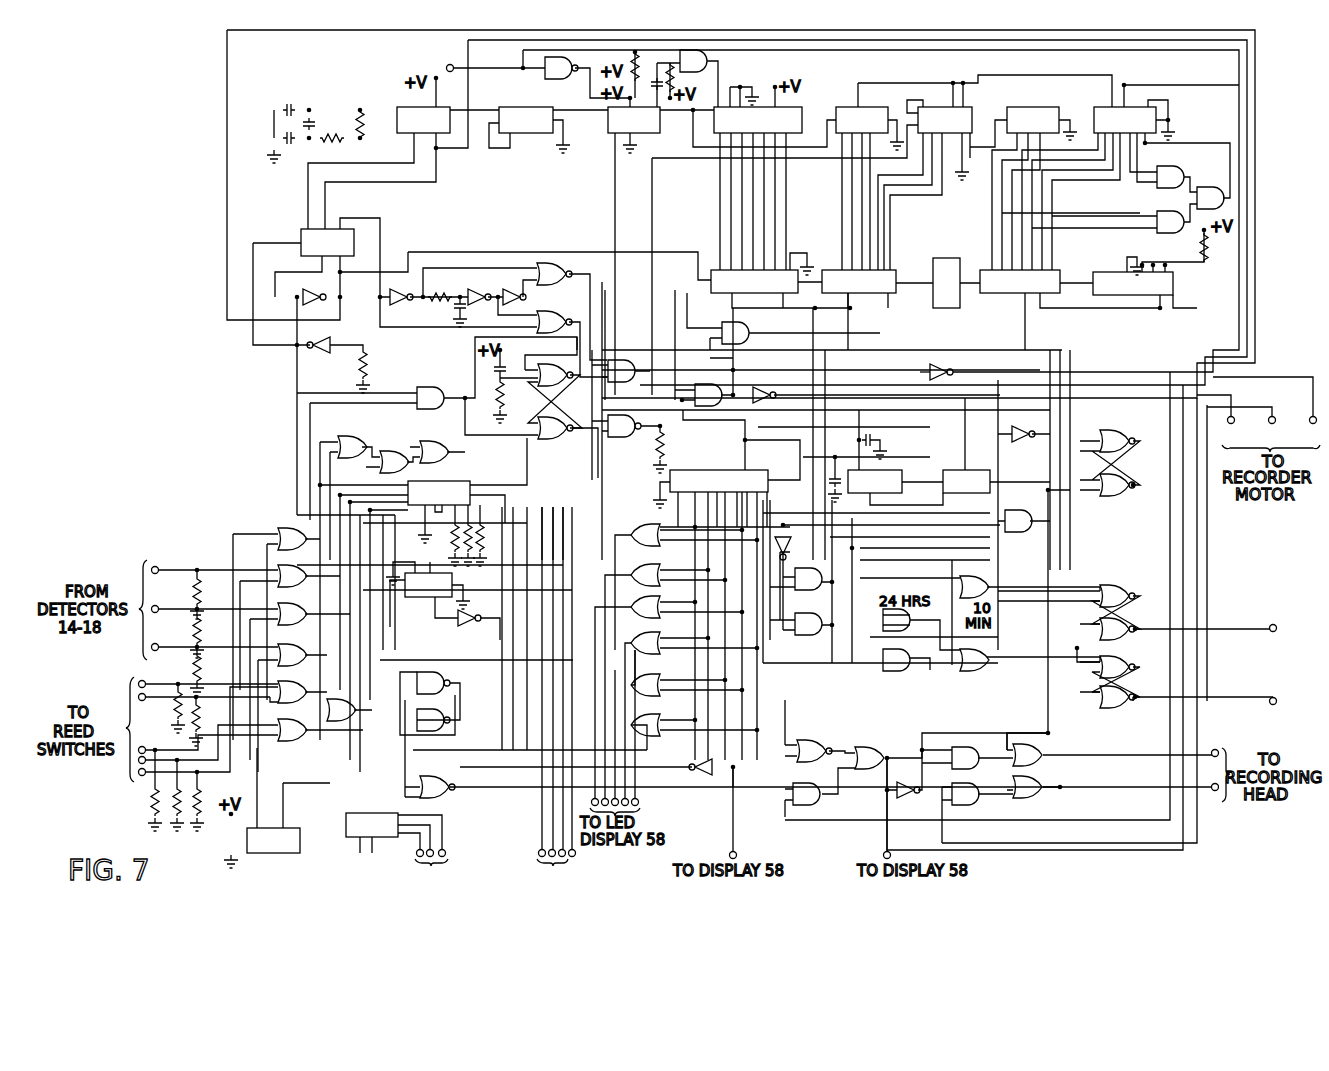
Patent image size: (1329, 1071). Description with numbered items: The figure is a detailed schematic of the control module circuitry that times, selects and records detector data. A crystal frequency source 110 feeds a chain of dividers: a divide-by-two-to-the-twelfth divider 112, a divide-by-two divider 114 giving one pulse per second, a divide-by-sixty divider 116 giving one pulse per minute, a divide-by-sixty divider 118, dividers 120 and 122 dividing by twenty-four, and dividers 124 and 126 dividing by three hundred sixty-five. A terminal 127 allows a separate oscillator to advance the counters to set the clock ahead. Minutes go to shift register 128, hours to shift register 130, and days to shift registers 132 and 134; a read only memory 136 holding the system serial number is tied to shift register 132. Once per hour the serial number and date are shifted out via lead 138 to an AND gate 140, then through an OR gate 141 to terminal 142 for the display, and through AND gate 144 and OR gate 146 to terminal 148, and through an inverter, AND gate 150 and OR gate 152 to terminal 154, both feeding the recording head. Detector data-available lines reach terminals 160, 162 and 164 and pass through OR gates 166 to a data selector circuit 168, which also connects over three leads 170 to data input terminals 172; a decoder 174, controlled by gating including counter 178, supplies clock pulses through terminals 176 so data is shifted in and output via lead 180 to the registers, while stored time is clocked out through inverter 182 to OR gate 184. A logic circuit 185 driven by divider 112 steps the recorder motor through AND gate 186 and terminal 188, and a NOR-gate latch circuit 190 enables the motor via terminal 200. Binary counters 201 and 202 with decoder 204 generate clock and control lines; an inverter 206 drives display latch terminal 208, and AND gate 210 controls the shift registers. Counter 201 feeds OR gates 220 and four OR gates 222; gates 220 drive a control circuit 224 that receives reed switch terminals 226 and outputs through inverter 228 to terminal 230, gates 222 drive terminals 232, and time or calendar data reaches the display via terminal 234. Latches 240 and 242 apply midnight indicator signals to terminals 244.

The crystal frequency source 110 is at (333, 104).
The divide-by-2^12 divider 112 is at (398, 107).
The divide-by-2 divider 114 is at (530, 133).
The divide-by-60 divider 116 is at (609, 133).
The divide-by-60 divider 118 is at (800, 107).
The divider 120 is at (862, 120).
The divider 122 is at (945, 120).
The divider 124 is at (1033, 120).
The divider 126 is at (1125, 120).
The terminal 127 is at (450, 64).
The shift register 128 is at (754, 281).
The shift register 130 is at (859, 281).
The shift register 132 is at (1020, 281).
The shift register 134 is at (1133, 283).
The read only memory (ROM) 136 is at (965, 237).
The lead 138 is at (1165, 445).
The AND gate 140 is at (822, 800).
The OR gate 141 is at (872, 762).
The terminal 142 is at (884, 853).
The AND gate 144 is at (962, 750).
The OR gate 146 is at (1037, 752).
The terminal 148 is at (1215, 750).
The AND gate 150 is at (968, 805).
The OR gate 152 is at (1040, 796).
The terminal 154 is at (1215, 791).
The terminal 160 is at (157, 566).
The terminal 162 is at (155, 606).
The terminal 164 is at (155, 644).
The OR gates 166 is at (285, 522).
The data selector circuit 168 is at (439, 493).
The leads 170 is at (562, 541).
The terminals 172 is at (553, 869).
The decoder 174 is at (372, 825).
The terminals 176 is at (430, 869).
The counter 178 is at (273, 840).
The lead 180 is at (598, 478).
The inverter 182 is at (920, 372).
The OR gate 184 is at (828, 746).
The two input AND and OR logic circuit 185 is at (327, 242).
The AND gate 186 is at (722, 328).
The terminal 188 is at (1310, 417).
The latch circuit 190 is at (525, 412).
The terminal 200 is at (1270, 418).
The binary counter 201 is at (719, 481).
The binary counter 202 is at (875, 481).
The decoder 204 is at (966, 481).
The inverter 206 is at (1021, 448).
The terminal 208 is at (1233, 423).
The AND gate 210 is at (1017, 510).
The OR gates 220 is at (636, 528).
The OR gates 222 is at (630, 604).
The control circuit 224 is at (428, 585).
The terminals 226 is at (118, 703).
The inverter 228 is at (472, 628).
The terminal 230 is at (574, 857).
The terminals 232 is at (650, 803).
The terminal 234 is at (736, 852).
The latch 240 is at (1150, 595).
The latch 242 is at (1112, 718).
The terminals 244 is at (1273, 632).